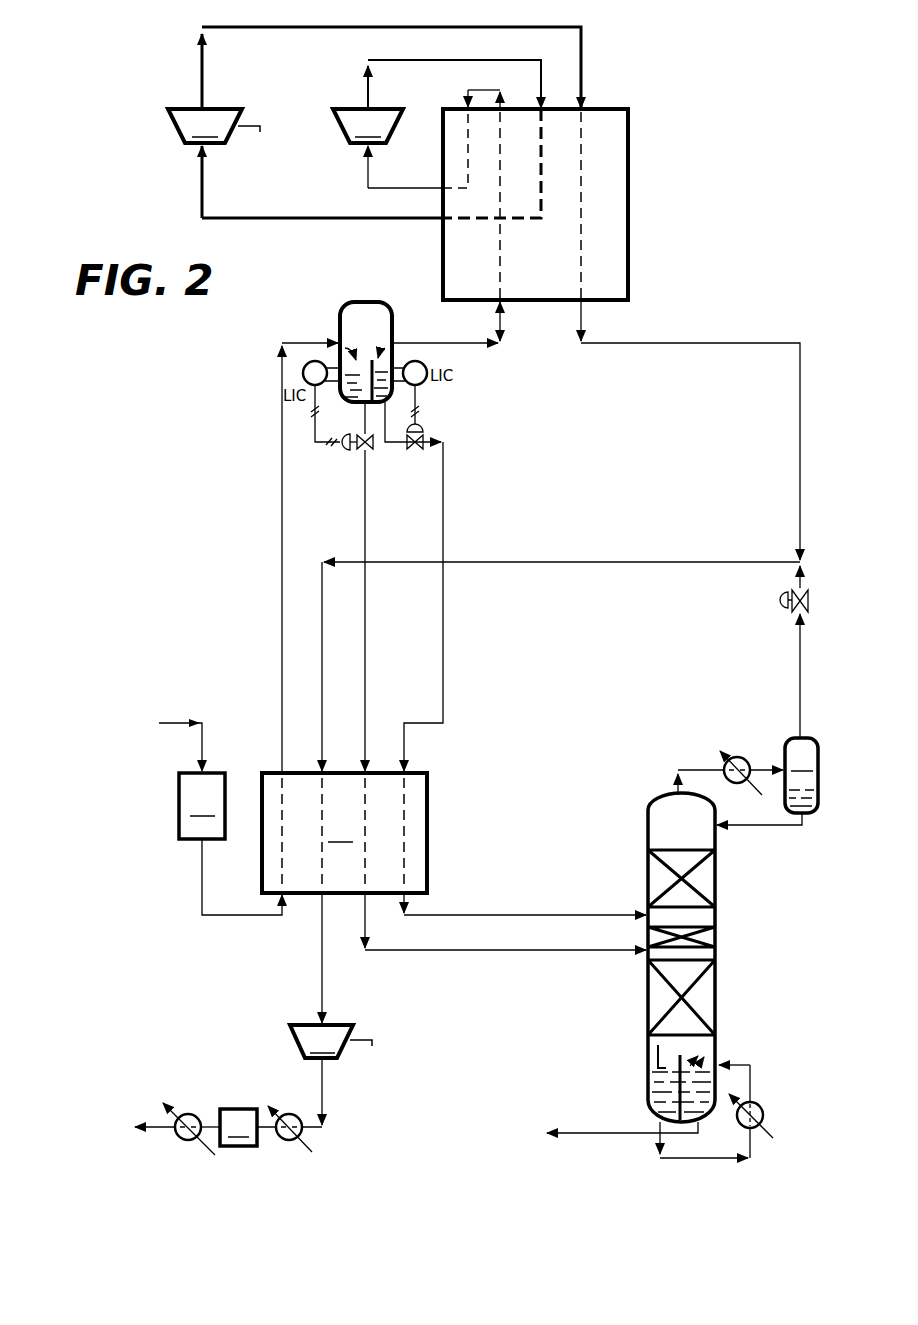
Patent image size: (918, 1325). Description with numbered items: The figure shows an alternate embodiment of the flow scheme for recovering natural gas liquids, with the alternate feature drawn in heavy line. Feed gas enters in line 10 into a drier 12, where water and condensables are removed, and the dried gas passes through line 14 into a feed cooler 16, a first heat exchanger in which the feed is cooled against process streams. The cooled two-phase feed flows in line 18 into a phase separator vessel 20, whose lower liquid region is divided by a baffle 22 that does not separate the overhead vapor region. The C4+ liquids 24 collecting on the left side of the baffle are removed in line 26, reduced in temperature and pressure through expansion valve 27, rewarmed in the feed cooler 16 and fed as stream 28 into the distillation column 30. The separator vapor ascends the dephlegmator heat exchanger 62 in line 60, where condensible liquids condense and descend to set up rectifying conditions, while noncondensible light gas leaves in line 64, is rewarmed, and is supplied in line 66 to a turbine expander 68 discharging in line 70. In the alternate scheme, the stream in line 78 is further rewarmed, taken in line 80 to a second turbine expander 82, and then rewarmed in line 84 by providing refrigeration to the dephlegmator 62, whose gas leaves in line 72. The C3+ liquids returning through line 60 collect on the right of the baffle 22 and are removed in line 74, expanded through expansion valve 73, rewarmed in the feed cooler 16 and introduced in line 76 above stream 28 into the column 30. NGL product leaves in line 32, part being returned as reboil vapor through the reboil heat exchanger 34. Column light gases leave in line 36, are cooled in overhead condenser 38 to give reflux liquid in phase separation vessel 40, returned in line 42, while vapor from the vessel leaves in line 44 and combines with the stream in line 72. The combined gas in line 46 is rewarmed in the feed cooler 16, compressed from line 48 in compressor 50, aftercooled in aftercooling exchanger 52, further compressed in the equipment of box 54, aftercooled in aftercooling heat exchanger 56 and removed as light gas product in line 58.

The line 10 is at (171, 722).
The drier 12 is at (163, 806).
The line 14 is at (200, 884).
The feed cooler 16 is at (344, 833).
The line 18 is at (291, 338).
The phase separator vessel 20 is at (337, 330).
The baffle 22 is at (368, 360).
The C4+ liquids 24 is at (358, 403).
The line 26 is at (371, 446).
The expansion valve 27 is at (344, 451).
The stream 28 is at (516, 953).
The distillation column 30 is at (718, 992).
The line 32 is at (585, 1133).
The reboil heat exchanger 34 is at (763, 1115).
The line 36 is at (670, 783).
The overhead condenser 38 is at (747, 757).
The phase separation vessel 40 is at (801, 775).
The line 42 is at (768, 826).
The line 44 is at (798, 662).
The line 46 is at (545, 561).
The line 48 is at (324, 1010).
The compressor 50 is at (331, 1075).
The aftercooling exchanger 52 is at (292, 1113).
The box 54 is at (238, 1127).
The aftercooling heat exchanger 56 is at (193, 1113).
The line 58 is at (158, 1130).
The line 60 is at (472, 342).
The dephlegmator heat exchanger 62 is at (628, 187).
The line 64 is at (468, 88).
The line 66 is at (368, 170).
The turbine expander 68 is at (368, 126).
The line 70 is at (413, 60).
The line 72 is at (728, 342).
The expansion valve 73 is at (421, 415).
The line 74 is at (440, 441).
The line 76 is at (572, 914).
The line 78 is at (539, 88).
The line 80 is at (210, 183).
The turbine expander 82 is at (214, 126).
The line 84 is at (285, 31).